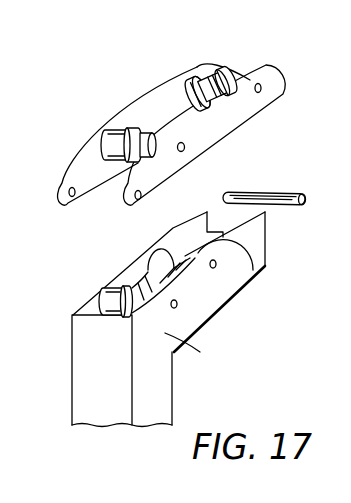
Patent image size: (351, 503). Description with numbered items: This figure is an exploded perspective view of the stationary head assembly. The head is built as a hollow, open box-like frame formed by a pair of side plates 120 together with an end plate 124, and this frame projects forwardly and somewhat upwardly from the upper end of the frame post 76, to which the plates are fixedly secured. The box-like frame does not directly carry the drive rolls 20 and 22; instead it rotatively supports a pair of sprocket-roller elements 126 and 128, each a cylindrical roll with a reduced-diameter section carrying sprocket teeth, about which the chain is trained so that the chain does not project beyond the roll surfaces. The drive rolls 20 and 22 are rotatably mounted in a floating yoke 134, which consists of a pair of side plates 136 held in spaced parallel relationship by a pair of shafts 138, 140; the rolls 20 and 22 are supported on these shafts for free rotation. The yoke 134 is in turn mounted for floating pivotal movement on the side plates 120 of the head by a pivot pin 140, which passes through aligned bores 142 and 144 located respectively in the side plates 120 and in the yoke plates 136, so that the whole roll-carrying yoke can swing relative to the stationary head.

The drive roll 20 is at (118, 133).
The drive roll 22 is at (225, 76).
The frame post 76 is at (80, 379).
The side plates 120 is at (143, 247).
The end plate 124 is at (264, 212).
The sprocket-roller element 126 is at (104, 296).
The sprocket-roller element 128 is at (261, 269).
The floating yoke 134 is at (196, 134).
The side plates 136 is at (143, 97).
The shaft 138 is at (184, 150).
The shaft / pivot pin 140 is at (262, 83).
The bore 142 is at (186, 345).
The bore 144 is at (77, 193).